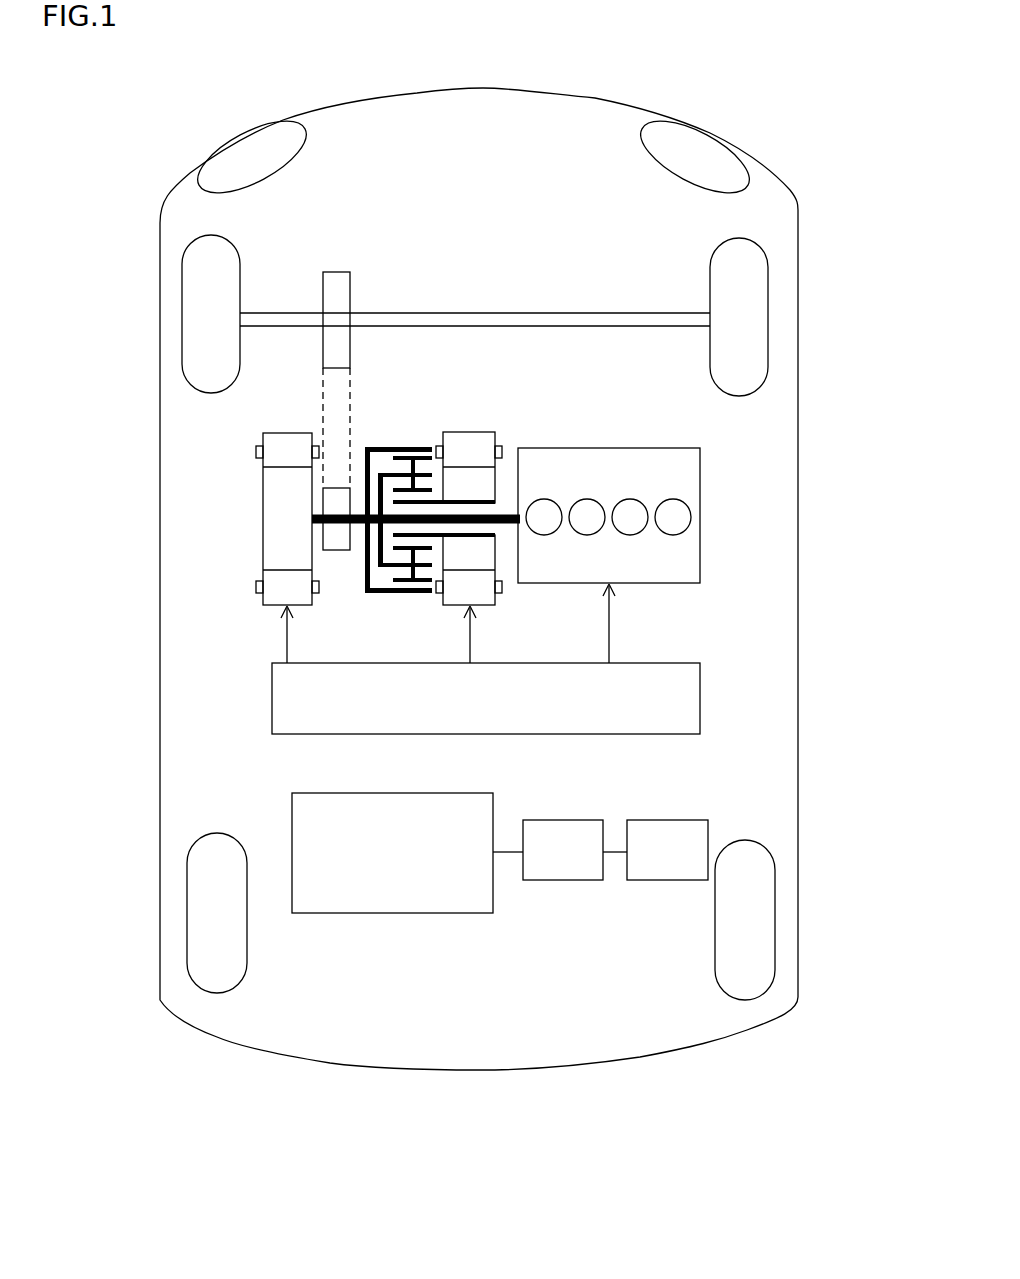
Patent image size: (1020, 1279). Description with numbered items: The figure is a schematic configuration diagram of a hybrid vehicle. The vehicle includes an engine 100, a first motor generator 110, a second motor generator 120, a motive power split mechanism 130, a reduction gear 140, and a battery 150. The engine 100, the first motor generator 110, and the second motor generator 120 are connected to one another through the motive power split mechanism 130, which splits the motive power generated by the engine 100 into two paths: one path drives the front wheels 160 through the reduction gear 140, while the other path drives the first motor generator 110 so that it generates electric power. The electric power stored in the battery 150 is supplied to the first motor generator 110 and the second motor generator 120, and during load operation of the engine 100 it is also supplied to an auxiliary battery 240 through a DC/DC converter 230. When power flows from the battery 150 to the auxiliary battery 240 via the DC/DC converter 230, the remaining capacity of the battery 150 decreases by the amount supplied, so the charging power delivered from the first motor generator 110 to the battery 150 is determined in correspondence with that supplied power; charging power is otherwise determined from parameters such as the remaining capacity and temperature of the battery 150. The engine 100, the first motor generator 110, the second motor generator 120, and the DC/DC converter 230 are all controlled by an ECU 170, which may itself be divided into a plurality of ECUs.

The engine 100 is at (557, 447).
The first motor generator 110 is at (470, 431).
The second motor generator 120 is at (262, 511).
The motive power split mechanism 130 is at (398, 447).
The reduction gear 140 is at (334, 256).
The battery 150 is at (362, 914).
The front wheels 160 is at (181, 323).
The ECU 170 is at (271, 695).
The DC/DC converter 230 is at (560, 881).
The auxiliary battery 240 is at (665, 881).